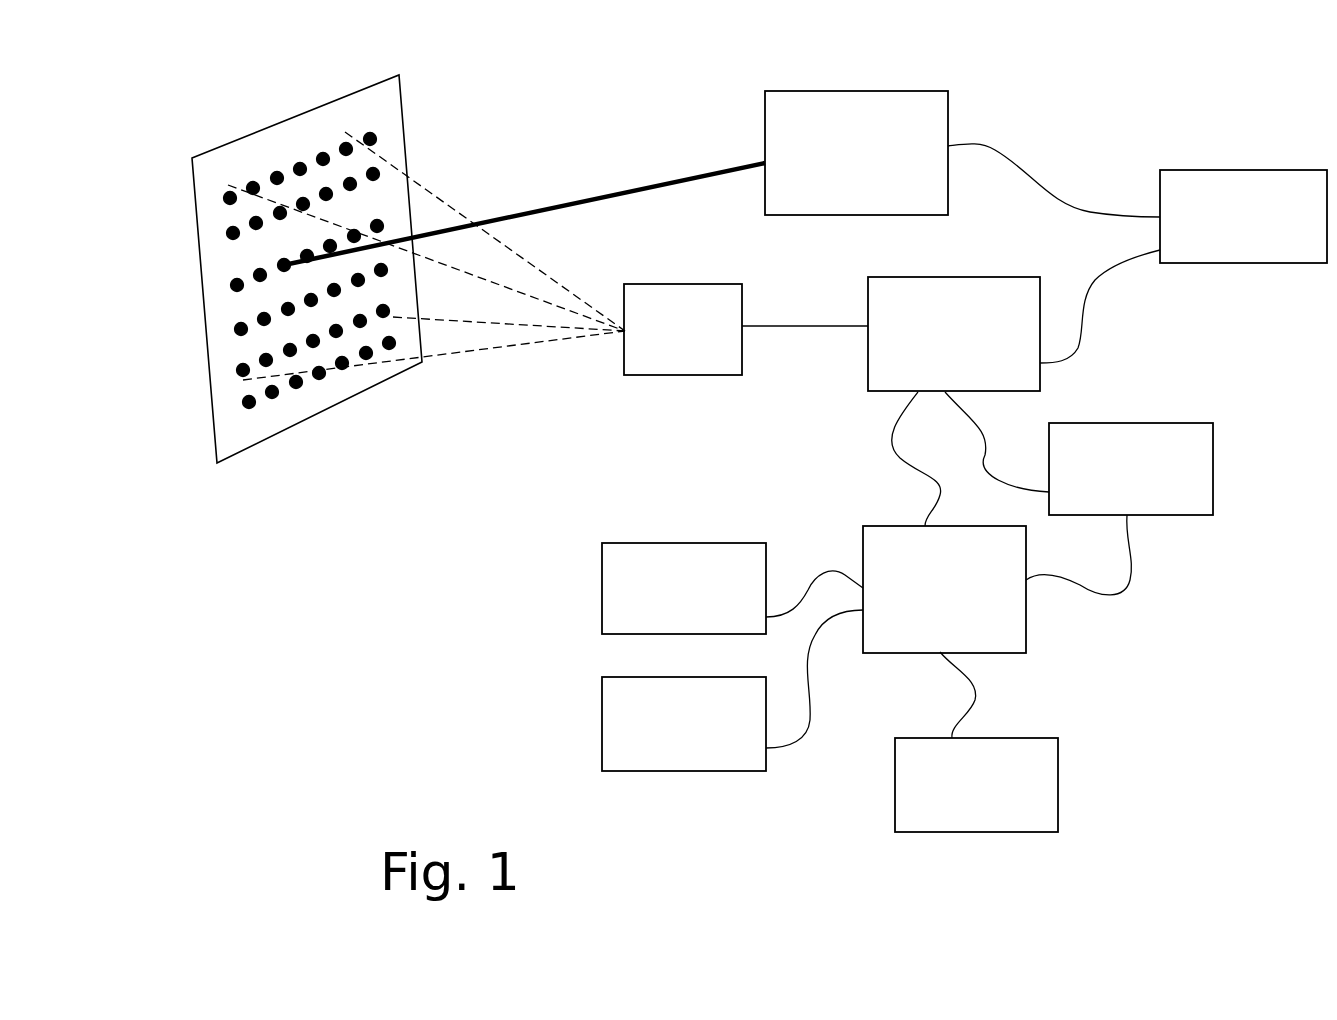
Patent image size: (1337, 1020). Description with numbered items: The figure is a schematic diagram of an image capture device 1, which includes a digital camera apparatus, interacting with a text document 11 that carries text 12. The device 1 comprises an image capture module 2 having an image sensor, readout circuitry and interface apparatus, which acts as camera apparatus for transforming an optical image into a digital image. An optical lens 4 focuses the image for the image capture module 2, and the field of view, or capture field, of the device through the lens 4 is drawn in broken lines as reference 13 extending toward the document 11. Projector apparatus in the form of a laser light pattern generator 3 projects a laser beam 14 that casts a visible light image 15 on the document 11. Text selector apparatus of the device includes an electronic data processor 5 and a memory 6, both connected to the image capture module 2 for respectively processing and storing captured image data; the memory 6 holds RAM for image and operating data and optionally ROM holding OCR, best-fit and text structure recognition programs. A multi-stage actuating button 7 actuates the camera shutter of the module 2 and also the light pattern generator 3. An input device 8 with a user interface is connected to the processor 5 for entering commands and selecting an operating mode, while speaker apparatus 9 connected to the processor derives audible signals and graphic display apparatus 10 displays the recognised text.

The image capture device 1 is at (1185, 658).
The image capture module 2 is at (954, 334).
The laser light pattern generator 3 is at (856, 153).
The optical lens 4 is at (683, 329).
The electronic data processor 5 is at (944, 589).
The memory 6 is at (1131, 469).
The multi-stage actuating button 7 is at (1243, 216).
The input device 8 is at (976, 785).
The speaker apparatus 9 is at (684, 588).
The graphic display apparatus 10 is at (684, 724).
The text document 11 is at (210, 151).
The text 12 is at (237, 285).
The field of view 13 is at (538, 354).
The laser beam 14 is at (608, 195).
The visible light image 15 is at (283, 268).